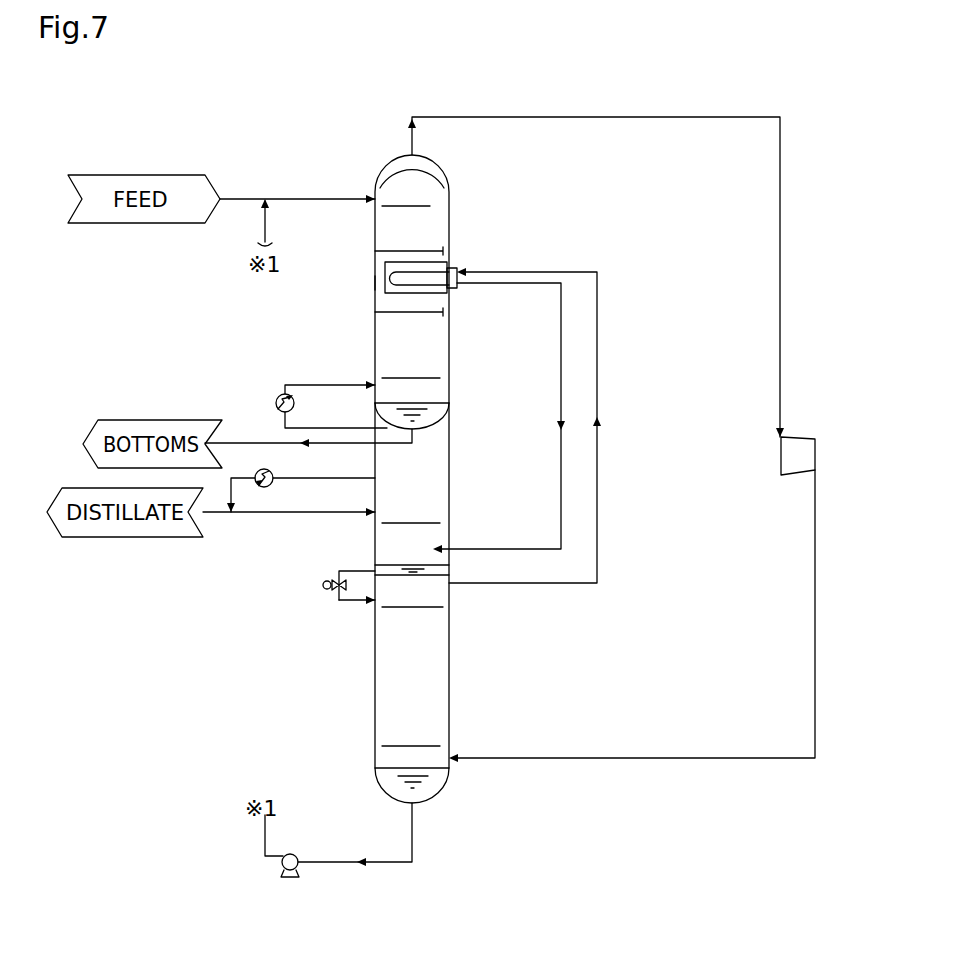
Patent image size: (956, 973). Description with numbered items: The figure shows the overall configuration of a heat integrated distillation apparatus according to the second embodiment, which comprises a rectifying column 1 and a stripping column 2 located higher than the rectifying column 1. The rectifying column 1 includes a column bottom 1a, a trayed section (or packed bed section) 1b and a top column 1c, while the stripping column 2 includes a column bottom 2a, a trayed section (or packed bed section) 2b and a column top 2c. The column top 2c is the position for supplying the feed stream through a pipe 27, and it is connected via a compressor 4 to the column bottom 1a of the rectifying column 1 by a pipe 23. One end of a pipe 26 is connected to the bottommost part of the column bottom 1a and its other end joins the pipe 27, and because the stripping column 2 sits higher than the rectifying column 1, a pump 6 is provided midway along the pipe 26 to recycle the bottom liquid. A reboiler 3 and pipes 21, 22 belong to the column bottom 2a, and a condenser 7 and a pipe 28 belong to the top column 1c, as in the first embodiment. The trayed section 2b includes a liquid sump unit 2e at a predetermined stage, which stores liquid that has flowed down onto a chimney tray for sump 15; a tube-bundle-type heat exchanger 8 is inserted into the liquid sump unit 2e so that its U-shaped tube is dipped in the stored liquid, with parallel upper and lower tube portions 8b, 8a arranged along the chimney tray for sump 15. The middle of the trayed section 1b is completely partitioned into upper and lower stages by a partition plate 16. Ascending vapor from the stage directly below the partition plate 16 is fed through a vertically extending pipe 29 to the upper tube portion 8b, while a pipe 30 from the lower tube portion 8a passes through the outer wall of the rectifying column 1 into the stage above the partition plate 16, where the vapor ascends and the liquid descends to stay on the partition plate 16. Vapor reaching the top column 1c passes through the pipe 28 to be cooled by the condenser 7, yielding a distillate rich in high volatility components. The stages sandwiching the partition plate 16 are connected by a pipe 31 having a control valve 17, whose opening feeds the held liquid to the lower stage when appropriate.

The rectifying column 1 is at (367, 645).
The column bottom 1a is at (388, 755).
The trayed section 1b is at (388, 534).
The top column 1c is at (438, 490).
The stripping column 2 is at (367, 333).
The column bottom 2a is at (444, 390).
The trayed section 2b is at (437, 228).
The column top 2c is at (428, 187).
The liquid sump unit 2e is at (375, 283).
The reboiler 3 is at (280, 394).
The compressor 4 is at (800, 436).
The pump 6 is at (291, 854).
The condenser 7 is at (273, 484).
The tube-bundle-type heat exchanger 8 is at (375, 268).
The lower tube portion 8a is at (441, 291).
The upper tube portion 8b is at (438, 263).
The chimney tray for sump 15 is at (375, 305).
The partition plate 16 is at (446, 577).
The control valve 17 is at (327, 590).
The pipe 21 is at (336, 385).
The pipe 22 is at (256, 443).
The pipe 23 is at (660, 117).
The pipe 26 is at (262, 223).
The pipe 27 is at (300, 197).
The pipe 28 is at (305, 478).
The pipe 29 is at (597, 328).
The pipe 30 is at (561, 453).
The pipe 31 is at (345, 572).